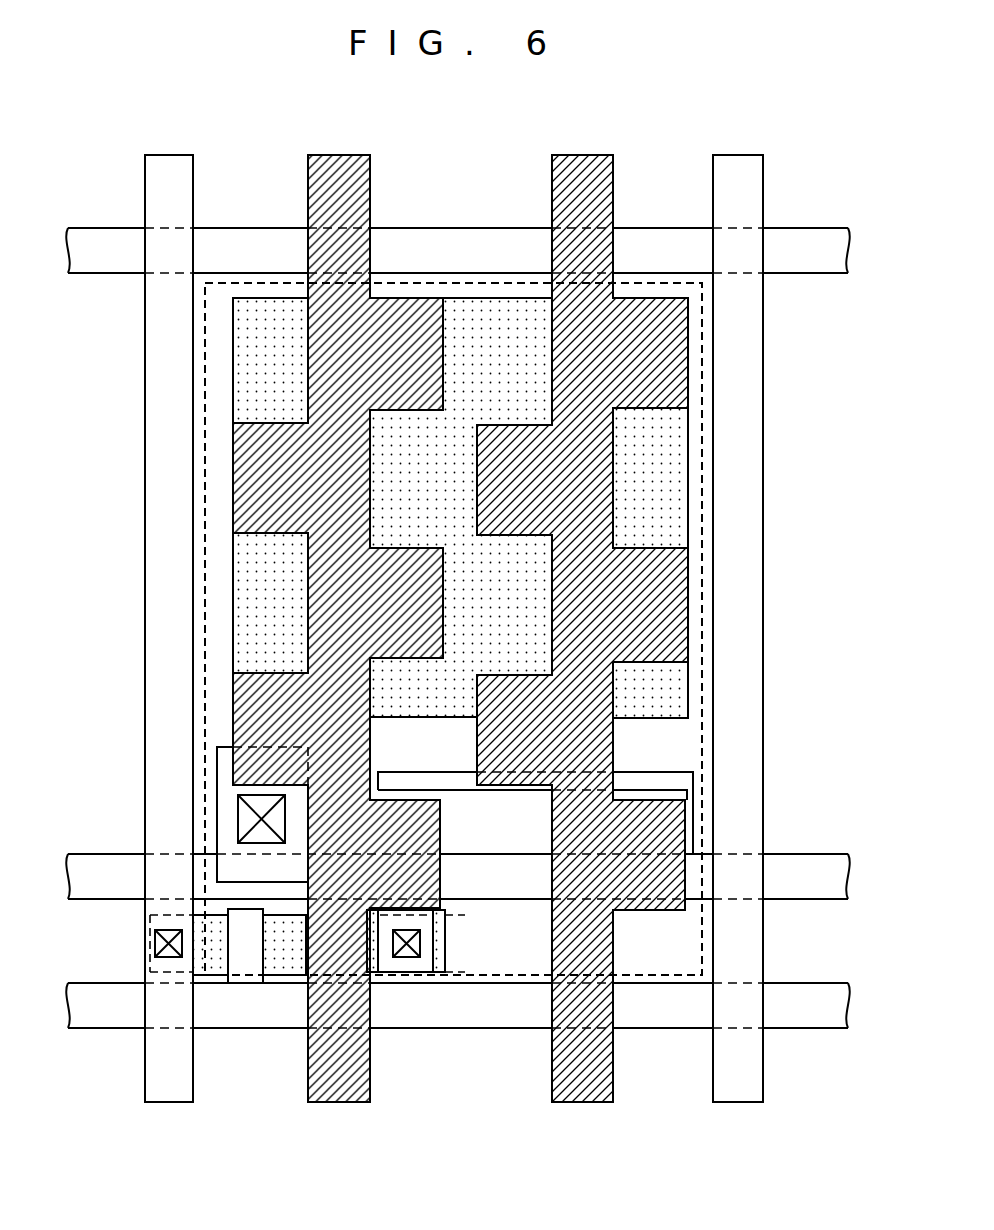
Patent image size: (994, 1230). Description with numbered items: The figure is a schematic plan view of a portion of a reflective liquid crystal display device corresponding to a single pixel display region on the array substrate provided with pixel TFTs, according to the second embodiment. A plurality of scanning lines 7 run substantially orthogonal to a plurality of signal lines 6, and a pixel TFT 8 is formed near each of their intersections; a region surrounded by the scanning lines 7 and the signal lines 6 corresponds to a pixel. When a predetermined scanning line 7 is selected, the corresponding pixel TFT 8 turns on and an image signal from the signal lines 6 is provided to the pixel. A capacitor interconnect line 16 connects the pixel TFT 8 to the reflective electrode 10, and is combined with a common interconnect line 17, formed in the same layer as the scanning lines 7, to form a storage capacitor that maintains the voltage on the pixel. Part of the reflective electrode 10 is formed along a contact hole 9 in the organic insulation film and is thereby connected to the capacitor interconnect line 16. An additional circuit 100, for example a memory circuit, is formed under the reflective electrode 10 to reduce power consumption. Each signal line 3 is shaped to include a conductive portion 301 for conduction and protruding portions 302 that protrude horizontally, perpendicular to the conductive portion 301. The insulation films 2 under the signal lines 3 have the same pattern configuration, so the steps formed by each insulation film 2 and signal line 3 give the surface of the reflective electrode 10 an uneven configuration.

The insulation film 2 is at (333, 1087).
The signal line 3 is at (578, 1087).
The signal line 6 is at (168, 1087).
The scanning line 7 is at (812, 262).
The pixel TFT 8 is at (245, 1003).
The contact hole 9 is at (245, 830).
The reflective electrode 10 is at (196, 712).
The capacitor interconnect line 16 is at (230, 788).
The common interconnect line 17 is at (820, 890).
The additional circuit 100 is at (653, 492).
The conductive portion 301 is at (332, 155).
The protruding portion 302 is at (437, 347).